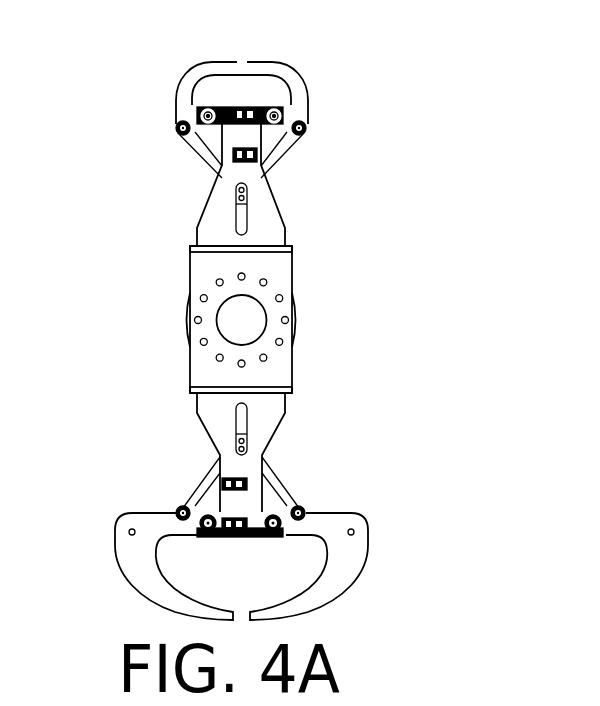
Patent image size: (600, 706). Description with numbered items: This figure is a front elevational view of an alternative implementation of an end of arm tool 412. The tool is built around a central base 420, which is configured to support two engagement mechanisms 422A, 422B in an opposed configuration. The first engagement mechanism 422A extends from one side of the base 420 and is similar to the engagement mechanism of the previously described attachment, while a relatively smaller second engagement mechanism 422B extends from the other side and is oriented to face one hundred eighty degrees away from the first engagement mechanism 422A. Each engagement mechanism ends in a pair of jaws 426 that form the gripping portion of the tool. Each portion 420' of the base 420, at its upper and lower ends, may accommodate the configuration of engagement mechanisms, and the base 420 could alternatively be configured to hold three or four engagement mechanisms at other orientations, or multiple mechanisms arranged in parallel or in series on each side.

The end of arm tool 412 is at (257, 30).
The base 420 is at (253, 316).
The portion of base 420' is at (209, 319).
The first engagement mechanism 422A is at (312, 455).
The second engagement mechanism 422B is at (327, 148).
The clamp jaws 426 is at (175, 98).